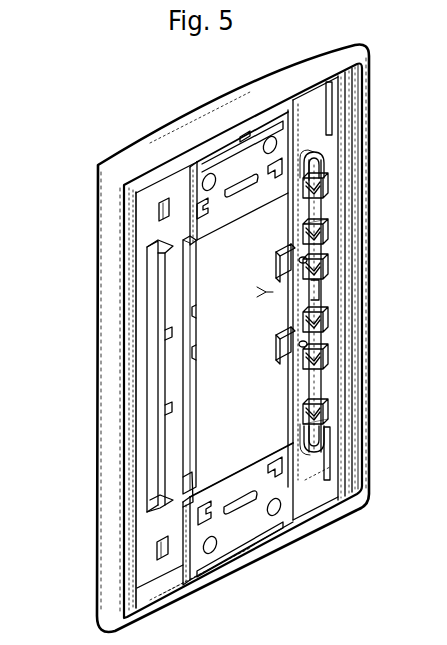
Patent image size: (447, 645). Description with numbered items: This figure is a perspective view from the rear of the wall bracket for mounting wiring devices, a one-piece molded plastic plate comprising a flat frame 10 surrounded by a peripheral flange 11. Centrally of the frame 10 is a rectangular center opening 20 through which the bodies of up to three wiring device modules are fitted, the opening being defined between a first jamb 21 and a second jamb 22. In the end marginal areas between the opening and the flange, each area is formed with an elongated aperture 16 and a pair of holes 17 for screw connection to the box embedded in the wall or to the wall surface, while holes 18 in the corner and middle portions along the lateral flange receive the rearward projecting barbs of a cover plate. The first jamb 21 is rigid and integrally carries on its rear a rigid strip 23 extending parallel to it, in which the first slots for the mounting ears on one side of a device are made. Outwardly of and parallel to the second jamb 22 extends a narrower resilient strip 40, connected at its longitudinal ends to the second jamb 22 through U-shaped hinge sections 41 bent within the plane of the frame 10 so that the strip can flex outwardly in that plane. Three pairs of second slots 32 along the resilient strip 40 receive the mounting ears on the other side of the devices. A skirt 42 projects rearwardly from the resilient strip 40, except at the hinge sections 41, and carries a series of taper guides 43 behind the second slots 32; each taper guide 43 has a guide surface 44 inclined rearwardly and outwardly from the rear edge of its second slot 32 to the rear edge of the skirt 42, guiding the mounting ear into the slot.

The flat frame 10 is at (96, 166).
The peripheral flange 11 is at (98, 423).
The elongated aperture 16 is at (240, 503).
The holes 17 is at (211, 553).
The holes 18 is at (156, 549).
The center opening 20 is at (240, 462).
The first jamb 21 is at (180, 363).
The second jamb 22 is at (279, 327).
The rigid strip 23 is at (150, 332).
The second slots 32 is at (307, 318).
The resilient strip 40 is at (322, 334).
The U-shaped hinge sections 41 is at (313, 157).
The skirt 42 is at (323, 287).
The taper guides 43 is at (328, 230).
The guide surface 44 is at (312, 233).